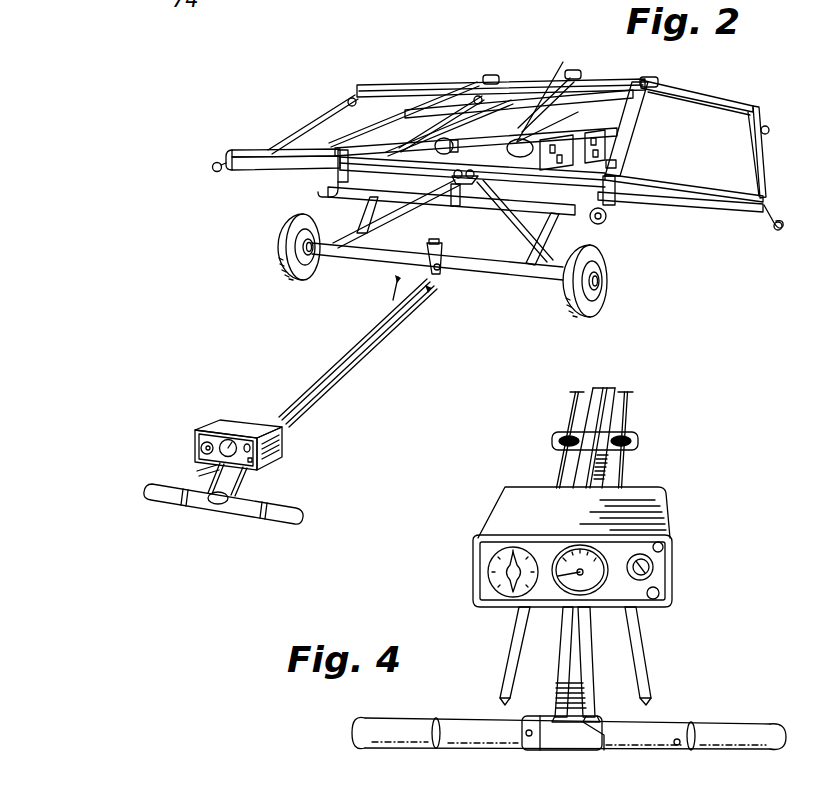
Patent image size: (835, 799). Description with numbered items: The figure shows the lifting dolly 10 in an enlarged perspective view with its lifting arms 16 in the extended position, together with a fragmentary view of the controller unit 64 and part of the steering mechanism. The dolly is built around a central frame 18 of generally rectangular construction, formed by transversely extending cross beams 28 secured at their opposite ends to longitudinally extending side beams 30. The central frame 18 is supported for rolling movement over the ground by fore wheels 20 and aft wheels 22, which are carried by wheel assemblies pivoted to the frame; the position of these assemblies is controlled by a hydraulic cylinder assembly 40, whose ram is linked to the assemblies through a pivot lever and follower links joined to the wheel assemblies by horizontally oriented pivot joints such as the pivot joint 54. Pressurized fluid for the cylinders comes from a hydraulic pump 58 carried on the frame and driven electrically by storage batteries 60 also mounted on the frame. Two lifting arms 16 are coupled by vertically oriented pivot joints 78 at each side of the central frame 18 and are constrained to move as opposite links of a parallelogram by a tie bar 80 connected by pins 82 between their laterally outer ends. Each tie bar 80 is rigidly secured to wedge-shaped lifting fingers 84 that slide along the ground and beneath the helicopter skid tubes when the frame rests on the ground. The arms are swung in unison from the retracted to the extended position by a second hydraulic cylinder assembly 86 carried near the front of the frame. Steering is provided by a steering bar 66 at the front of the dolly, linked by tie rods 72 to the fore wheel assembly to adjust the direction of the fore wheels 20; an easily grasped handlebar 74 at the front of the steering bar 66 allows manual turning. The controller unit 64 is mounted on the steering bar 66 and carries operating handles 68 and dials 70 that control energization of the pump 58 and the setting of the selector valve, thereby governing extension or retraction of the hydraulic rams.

In FIG. 2, the lifting dolly 10 is at (242, 207).
In FIG. 2, the lifting arms 16 is at (390, 90).
In FIG. 2, the central frame 18 is at (534, 78).
In FIG. 2, the fore wheels 20 is at (281, 267).
In FIG. 2, the aft wheels 22 is at (490, 75).
In FIG. 2, the cross beams 28 is at (618, 85).
In FIG. 2, the side beams 30 is at (390, 128).
In FIG. 2, the hydraulic cylinder assembly 40 is at (450, 130).
In FIG. 2, the pivot joint 54 is at (513, 230).
In FIG. 2, the hydraulic pump 58 is at (602, 141).
In FIG. 2, the storage batteries 60 is at (614, 163).
In FIG. 2, the controller unit 64 is at (297, 452).
In FIG. 4, the controller unit 64 is at (688, 512).
In FIG. 2, the steering bar 66 is at (356, 360).
In FIG. 4, the steering bar 66 is at (597, 473).
In FIG. 4, the operating handles 68 is at (510, 663).
In FIG. 4, the dials 70 is at (549, 532).
In FIG. 2, the tie rods 72 is at (457, 243).
In FIG. 2, the handlebar 74 is at (240, 510).
In FIG. 4, the handlebar 74 is at (623, 745).
In FIG. 2, the pivot joints 78 is at (660, 90).
In FIG. 2, the tie bar 80 is at (763, 160).
In FIG. 2, the pins 82 is at (767, 197).
In FIG. 2, the lifting fingers 84 is at (213, 170).
In FIG. 2, the second hydraulic cylinder assembly 86 is at (552, 90).